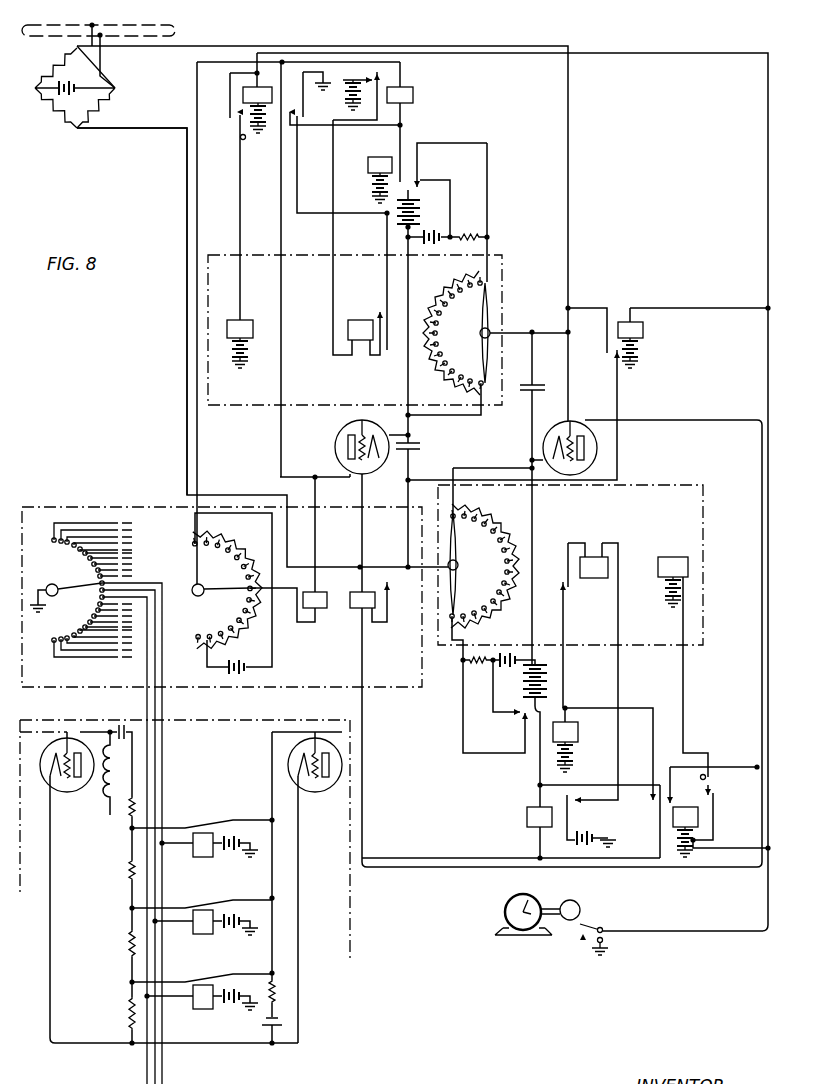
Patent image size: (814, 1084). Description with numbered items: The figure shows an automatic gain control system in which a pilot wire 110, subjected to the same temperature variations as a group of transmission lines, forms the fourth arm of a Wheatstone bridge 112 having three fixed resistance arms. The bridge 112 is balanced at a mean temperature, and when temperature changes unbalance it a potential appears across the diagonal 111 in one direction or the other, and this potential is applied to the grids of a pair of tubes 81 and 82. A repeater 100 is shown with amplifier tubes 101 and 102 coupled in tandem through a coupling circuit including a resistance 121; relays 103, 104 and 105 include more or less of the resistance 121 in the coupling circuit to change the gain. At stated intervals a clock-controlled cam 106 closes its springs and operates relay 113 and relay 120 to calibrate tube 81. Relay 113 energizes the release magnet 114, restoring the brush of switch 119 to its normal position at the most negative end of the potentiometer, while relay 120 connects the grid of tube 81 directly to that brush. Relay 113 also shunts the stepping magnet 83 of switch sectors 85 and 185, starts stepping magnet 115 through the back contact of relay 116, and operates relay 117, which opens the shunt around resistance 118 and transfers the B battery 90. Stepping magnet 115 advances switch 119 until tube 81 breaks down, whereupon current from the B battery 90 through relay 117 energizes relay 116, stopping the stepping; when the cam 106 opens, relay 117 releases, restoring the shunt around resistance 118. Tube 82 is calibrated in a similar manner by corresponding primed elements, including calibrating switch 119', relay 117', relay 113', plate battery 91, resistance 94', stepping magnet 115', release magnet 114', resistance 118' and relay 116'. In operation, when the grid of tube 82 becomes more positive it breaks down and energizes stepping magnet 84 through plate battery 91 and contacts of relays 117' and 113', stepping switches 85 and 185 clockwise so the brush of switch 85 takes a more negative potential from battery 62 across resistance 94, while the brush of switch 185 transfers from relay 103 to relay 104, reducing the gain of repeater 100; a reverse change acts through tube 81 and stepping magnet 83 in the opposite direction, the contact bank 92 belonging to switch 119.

The pilot wire 110 is at (113, 30).
The diagonal 111 is at (145, 128).
The Wheatstone bridge 112 is at (75, 87).
The relay 113 is at (236, 113).
The release magnet 114 is at (251, 331).
The stepping magnet 115 is at (364, 317).
The relay 116 is at (427, 96).
The relay 117 is at (364, 179).
The resistance 118 is at (471, 223).
The B battery 90 is at (413, 209).
The contact bank 92 is at (446, 250).
The switch 119 is at (468, 333).
The relay 120 is at (645, 330).
The tube 81 is at (336, 446).
The tube 82 is at (565, 427).
The resistance 94 is at (229, 581).
The switch 85 is at (205, 605).
The battery 62 is at (244, 668).
The switch 185 is at (104, 803).
The stepping magnet 83 is at (326, 596).
The stepping magnet 84 is at (378, 596).
The contact bank 94' is at (490, 558).
The calibrating switch 119' is at (475, 563).
The relay 115' is at (599, 582).
The relay 114' is at (675, 565).
The plate battery 91 is at (550, 688).
The resistor 118' is at (484, 680).
The relay 117' is at (588, 747).
The relay 116' is at (520, 819).
The relay 113' is at (718, 816).
The amplifier tube 101 is at (75, 790).
The amplifier tube 102 is at (323, 789).
The repeater 100 is at (167, 900).
The resistance 121 is at (127, 1000).
The relay 103 is at (210, 857).
The relay 104 is at (210, 934).
The relay 105 is at (210, 1009).
The clock-controlled cam 106 is at (585, 911).